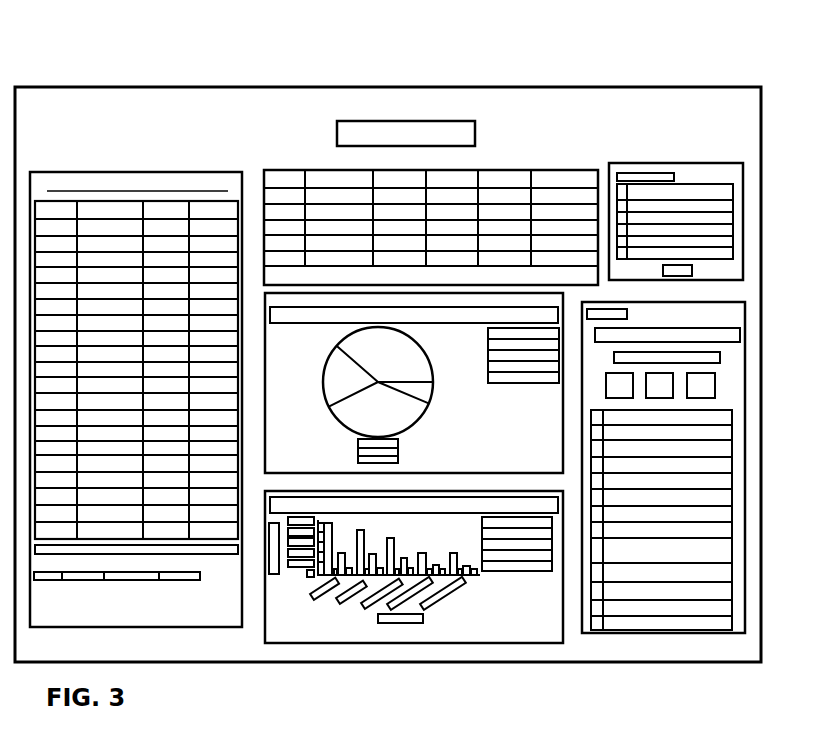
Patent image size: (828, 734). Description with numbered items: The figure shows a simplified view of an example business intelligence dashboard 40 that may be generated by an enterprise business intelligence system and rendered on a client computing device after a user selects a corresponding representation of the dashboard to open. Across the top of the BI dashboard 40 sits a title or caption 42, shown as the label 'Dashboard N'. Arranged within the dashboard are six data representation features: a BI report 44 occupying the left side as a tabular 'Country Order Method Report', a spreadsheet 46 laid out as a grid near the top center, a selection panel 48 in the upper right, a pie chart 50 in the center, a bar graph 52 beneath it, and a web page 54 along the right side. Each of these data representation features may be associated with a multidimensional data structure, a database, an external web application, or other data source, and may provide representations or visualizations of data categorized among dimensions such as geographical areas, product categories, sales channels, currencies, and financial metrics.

The business intelligence dashboard 40 is at (388, 335).
The title or caption 42 is at (426, 124).
The BI report 44 is at (136, 374).
The spreadsheet 46 is at (431, 204).
The selection panel 48 is at (676, 196).
The pie chart 50 is at (444, 378).
The bar graph 52 is at (414, 593).
The web page 54 is at (663, 498).